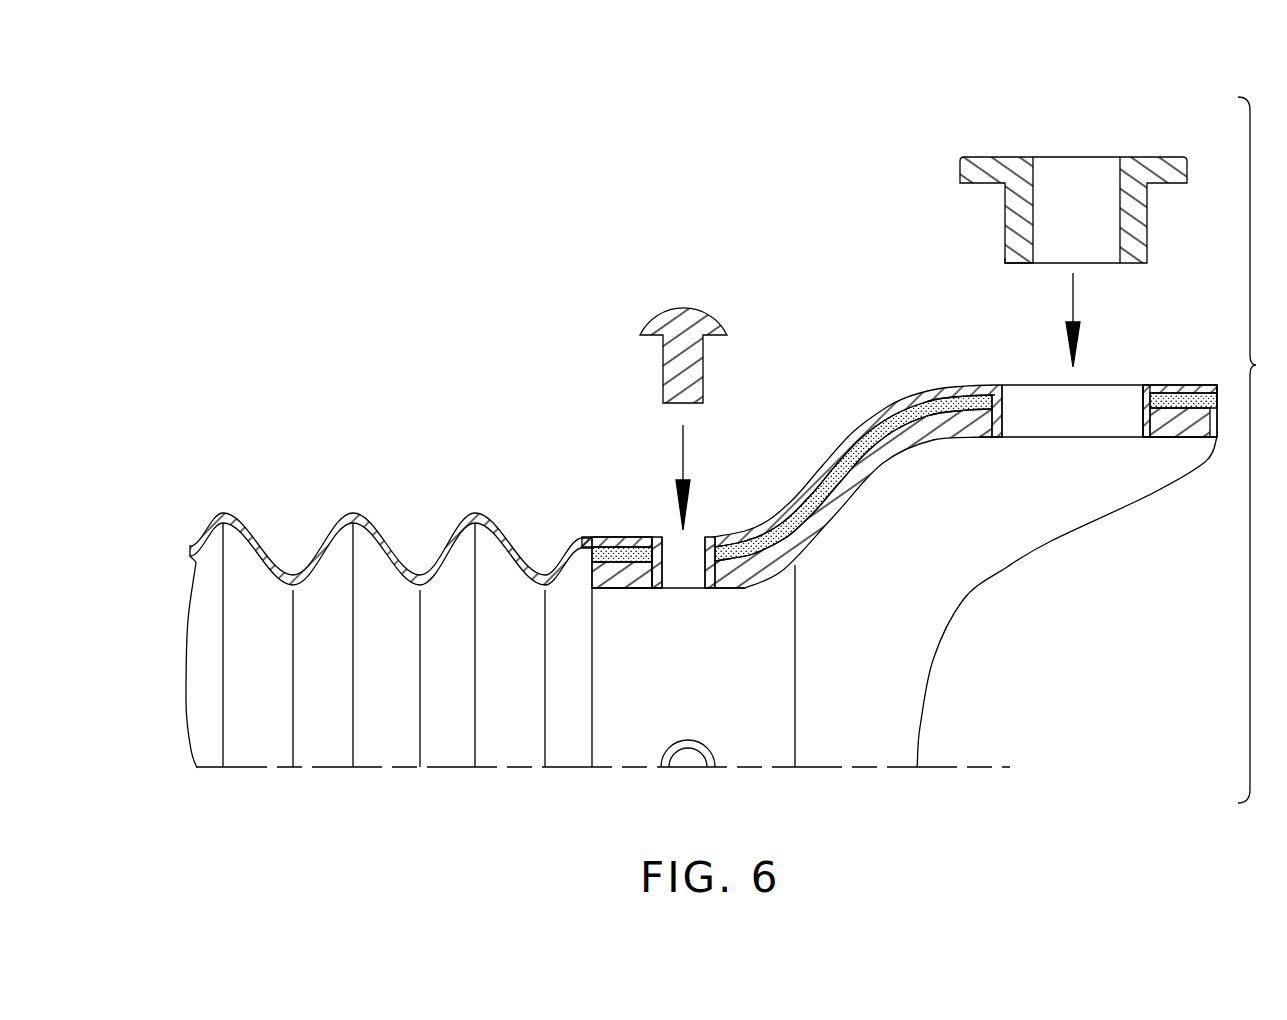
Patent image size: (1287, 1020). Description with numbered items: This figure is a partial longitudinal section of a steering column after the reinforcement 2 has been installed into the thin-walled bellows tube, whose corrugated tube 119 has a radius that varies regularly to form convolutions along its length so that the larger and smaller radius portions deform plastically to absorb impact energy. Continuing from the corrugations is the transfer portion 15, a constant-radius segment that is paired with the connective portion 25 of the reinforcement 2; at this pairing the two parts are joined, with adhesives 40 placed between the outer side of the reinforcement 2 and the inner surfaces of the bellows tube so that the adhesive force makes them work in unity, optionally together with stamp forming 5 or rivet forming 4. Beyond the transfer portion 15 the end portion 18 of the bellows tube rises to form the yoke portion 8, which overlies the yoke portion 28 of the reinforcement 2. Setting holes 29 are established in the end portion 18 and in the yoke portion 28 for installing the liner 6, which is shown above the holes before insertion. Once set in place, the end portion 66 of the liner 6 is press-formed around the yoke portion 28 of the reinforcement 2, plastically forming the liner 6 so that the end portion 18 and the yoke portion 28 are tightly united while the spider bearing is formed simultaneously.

The reinforcement 2 is at (1015, 600).
The rivet forming 4 is at (673, 310).
The stamp forming 5 is at (700, 567).
The liner 6 is at (997, 157).
The yoke portion 8 is at (968, 357).
The transfer portion 15 is at (620, 538).
The end portion 18 is at (893, 405).
The connective portion 25 is at (622, 590).
The yoke portion 28 is at (963, 443).
The setting holes 29 is at (1138, 410).
The adhesives 40 is at (846, 432).
The end portion of the liner 66 is at (1005, 263).
The corrugated tube 119 is at (185, 484).